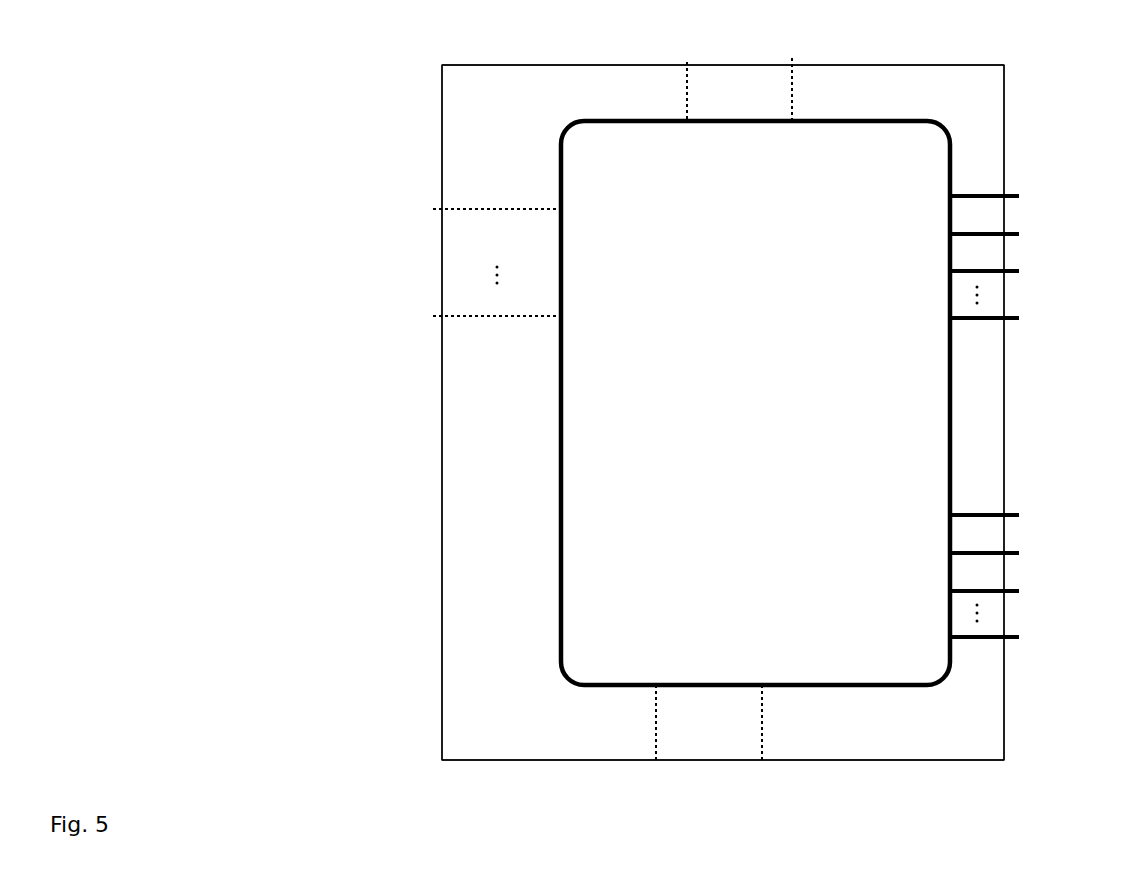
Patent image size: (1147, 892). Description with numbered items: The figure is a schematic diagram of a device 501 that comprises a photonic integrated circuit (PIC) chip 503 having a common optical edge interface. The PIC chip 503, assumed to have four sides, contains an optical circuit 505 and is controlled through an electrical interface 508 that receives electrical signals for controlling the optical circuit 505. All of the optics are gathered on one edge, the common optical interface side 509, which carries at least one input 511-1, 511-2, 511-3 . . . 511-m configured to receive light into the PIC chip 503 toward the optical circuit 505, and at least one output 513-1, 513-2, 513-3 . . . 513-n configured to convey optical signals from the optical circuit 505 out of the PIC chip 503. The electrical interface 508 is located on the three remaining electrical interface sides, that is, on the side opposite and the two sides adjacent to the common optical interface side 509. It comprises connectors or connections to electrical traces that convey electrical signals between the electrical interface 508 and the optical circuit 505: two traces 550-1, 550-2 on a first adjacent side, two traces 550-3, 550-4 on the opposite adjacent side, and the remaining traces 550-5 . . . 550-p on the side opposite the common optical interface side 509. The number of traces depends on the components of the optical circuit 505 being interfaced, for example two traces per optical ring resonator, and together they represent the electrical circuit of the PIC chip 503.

The device 501 is at (476, 562).
The photonic integrated circuit (PIC) chip 503 is at (556, 122).
The optical circuit 505 is at (780, 170).
The electrical interface 508 is at (712, 45).
The common optical interface side 509 is at (1065, 428).
The input 511-1 is at (1019, 196).
The input 511-2 is at (1019, 234).
The input 511-3 is at (1019, 271).
The input 511-m is at (1019, 318).
The output 513-1 is at (1019, 515).
The output 513-2 is at (1019, 553).
The output 513-3 is at (1019, 591).
The output 513-n is at (1019, 637).
The electrical trace 550-1 is at (680, 65).
The electrical trace 550-2 is at (792, 72).
The electrical trace 550-3 is at (653, 700).
The electrical trace 550-4 is at (762, 710).
The electrical trace 550-5 is at (513, 210).
The electrical trace 550-p is at (513, 316).